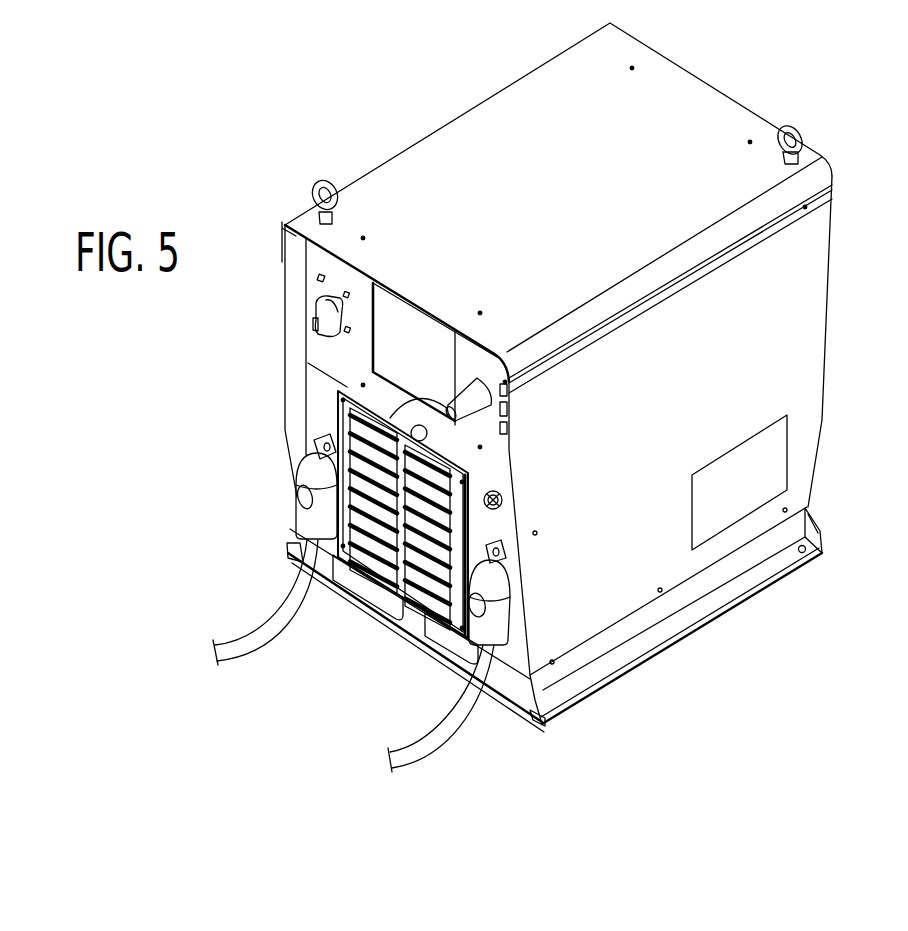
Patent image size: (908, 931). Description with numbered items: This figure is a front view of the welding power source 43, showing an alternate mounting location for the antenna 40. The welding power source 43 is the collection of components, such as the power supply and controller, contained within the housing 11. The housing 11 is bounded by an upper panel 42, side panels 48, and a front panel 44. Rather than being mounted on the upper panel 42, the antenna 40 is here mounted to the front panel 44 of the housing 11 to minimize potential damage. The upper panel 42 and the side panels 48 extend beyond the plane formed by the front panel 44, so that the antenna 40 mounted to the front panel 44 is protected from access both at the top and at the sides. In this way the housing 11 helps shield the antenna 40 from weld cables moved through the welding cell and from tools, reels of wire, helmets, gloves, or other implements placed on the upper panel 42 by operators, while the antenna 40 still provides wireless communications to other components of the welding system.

The housing 11 is at (830, 242).
The antenna 40 is at (486, 380).
The upper panel 42 is at (571, 192).
The welding power source 43 is at (699, 108).
The front panel 44 is at (318, 402).
The side panels 48 is at (688, 428).